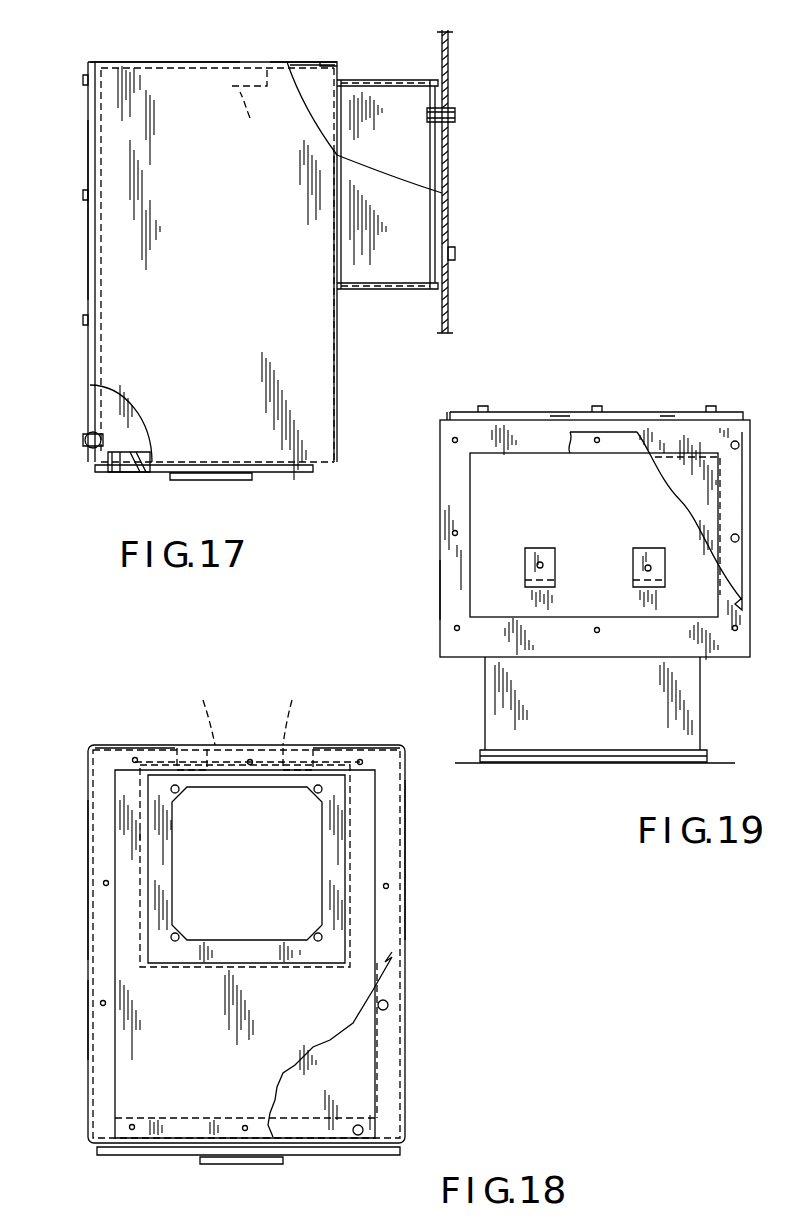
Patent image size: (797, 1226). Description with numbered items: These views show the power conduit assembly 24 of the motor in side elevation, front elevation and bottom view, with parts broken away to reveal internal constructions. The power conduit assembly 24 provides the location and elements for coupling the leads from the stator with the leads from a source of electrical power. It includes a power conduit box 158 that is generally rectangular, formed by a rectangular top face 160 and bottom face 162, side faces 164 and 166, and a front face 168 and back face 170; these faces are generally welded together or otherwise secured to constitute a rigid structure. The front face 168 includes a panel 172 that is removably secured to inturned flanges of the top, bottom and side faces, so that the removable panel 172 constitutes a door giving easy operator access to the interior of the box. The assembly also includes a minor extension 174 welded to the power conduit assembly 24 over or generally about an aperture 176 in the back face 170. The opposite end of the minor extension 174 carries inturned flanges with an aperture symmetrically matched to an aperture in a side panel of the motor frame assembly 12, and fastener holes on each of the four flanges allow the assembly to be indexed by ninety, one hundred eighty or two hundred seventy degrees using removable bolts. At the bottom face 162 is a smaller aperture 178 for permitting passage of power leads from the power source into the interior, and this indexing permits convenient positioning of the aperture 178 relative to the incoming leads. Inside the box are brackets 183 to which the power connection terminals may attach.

In FIG. 17, the motor frame assembly 12 is at (448, 40).
In FIG. 19, the motor frame assembly 12 is at (732, 762).
In FIG. 17, the power conduit assembly 24 is at (209, 57).
In FIG. 19, the power conduit assembly 24 is at (620, 412).
In FIG. 18, the power conduit assembly 24 is at (418, 988).
In FIG. 17, the power conduit box 158 is at (152, 60).
In FIG. 18, the power conduit box 158 is at (336, 745).
In FIG. 17, the top face 160 is at (274, 60).
In FIG. 18, the top face 160 is at (134, 745).
In FIG. 17, the bottom face 162 is at (325, 465).
In FIG. 19, the bottom face 162 is at (452, 502).
In FIG. 18, the bottom face 162 is at (396, 1155).
In FIG. 19, the side face 164 is at (440, 580).
In FIG. 18, the side face 164 is at (88, 882).
In FIG. 17, the side face 166 is at (305, 400).
In FIG. 19, the side face 166 is at (750, 622).
In FIG. 18, the side face 166 is at (438, 855).
In FIG. 17, the front face 168 is at (86, 448).
In FIG. 19, the front face 168 is at (447, 412).
In FIG. 18, the front face 168 is at (100, 1020).
In FIG. 17, the back face 170 is at (337, 318).
In FIG. 19, the back face 170 is at (456, 657).
In FIG. 18, the back face 170 is at (246, 944).
In FIG. 17, the panel 172 is at (87, 250).
In FIG. 19, the panel 172 is at (530, 412).
In FIG. 18, the panel 172 is at (385, 1068).
In FIG. 17, the minor extension 174 is at (378, 80).
In FIG. 19, the minor extension 174 is at (700, 710).
In FIG. 18, the minor extension 174 is at (352, 912).
In FIG. 18, the aperture 176 is at (248, 812).
In FIG. 17, the smaller aperture 178 is at (228, 480).
In FIG. 18, the smaller aperture 178 is at (235, 1164).
In FIG. 17, the brackets 183 is at (237, 100).
In FIG. 19, the brackets 183 is at (648, 548).
In FIG. 18, the brackets 183 is at (245, 724).